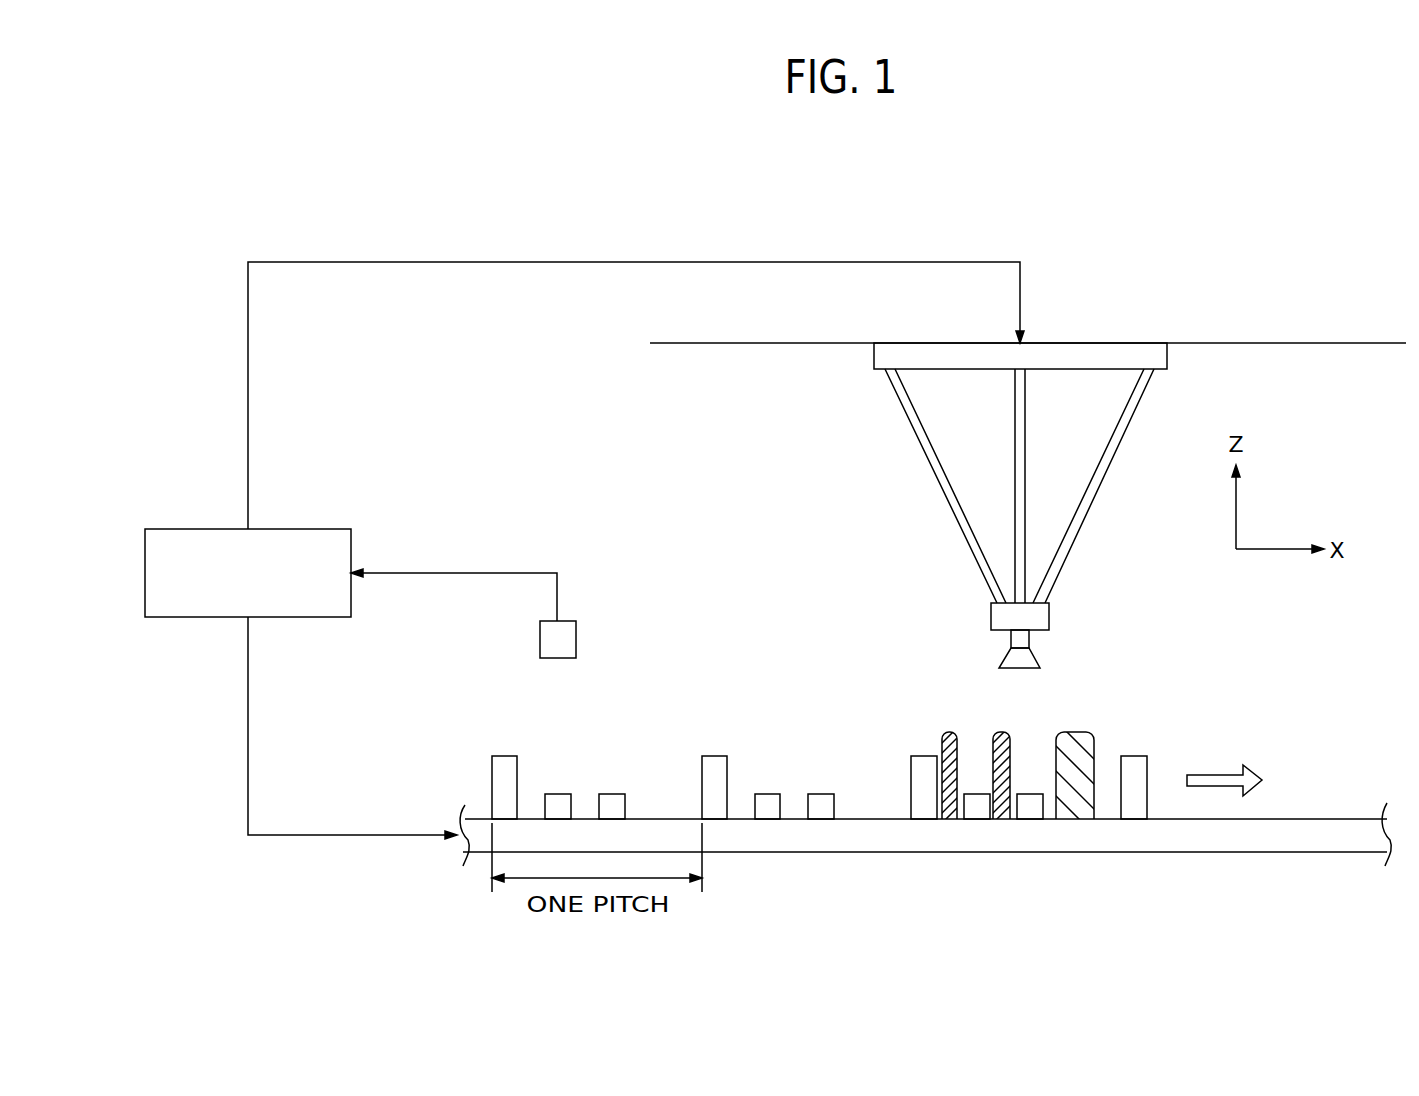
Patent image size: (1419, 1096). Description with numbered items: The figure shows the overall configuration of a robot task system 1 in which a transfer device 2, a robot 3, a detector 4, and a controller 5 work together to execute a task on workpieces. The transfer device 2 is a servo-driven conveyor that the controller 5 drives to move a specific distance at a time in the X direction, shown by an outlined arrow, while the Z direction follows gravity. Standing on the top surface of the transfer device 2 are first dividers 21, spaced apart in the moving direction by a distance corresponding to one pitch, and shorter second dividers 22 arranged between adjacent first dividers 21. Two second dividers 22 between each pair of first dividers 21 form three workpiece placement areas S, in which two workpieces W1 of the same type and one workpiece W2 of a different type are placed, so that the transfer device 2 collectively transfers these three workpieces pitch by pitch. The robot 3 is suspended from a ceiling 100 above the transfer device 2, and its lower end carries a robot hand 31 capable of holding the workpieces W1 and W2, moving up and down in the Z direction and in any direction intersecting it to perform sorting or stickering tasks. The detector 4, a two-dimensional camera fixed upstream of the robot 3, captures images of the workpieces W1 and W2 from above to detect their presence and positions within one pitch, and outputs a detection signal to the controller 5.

The robot task system 1 is at (1257, 196).
The ceiling 100 is at (1290, 345).
The robot 3 is at (925, 512).
The robot hand 31 is at (1036, 656).
The controller 5 is at (329, 529).
The detector 4 is at (576, 640).
The transfer device 2 is at (1313, 819).
The first dividers 21 is at (505, 756).
The second dividers 22 is at (612, 794).
The workpiece W1 is at (1001, 732).
The workpiece W2 is at (1074, 732).
The workpiece placement areas S is at (864, 835).